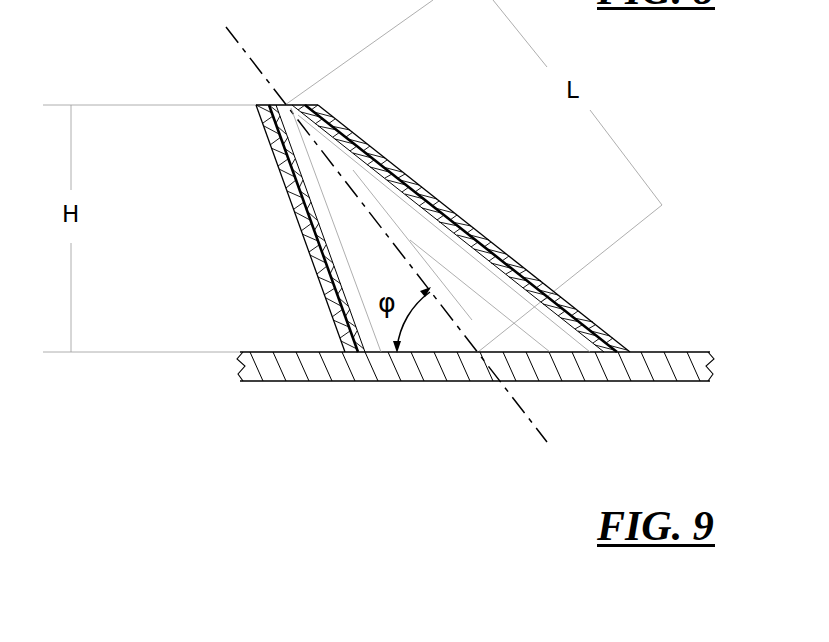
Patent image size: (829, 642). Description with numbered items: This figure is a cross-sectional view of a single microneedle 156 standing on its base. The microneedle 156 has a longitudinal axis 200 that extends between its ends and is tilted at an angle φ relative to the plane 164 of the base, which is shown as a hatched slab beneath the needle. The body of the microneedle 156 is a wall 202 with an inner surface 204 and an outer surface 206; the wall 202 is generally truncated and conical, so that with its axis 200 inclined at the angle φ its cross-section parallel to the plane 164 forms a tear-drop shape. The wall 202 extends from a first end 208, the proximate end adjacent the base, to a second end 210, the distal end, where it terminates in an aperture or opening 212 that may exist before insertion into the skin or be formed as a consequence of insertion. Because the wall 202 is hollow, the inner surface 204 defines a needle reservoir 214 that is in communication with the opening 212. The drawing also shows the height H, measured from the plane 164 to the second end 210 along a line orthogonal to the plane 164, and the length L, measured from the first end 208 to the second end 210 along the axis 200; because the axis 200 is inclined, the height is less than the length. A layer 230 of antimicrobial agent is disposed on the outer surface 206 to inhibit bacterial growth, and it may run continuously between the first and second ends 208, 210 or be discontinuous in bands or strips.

The microneedle 156 is at (454, 208).
The plane of the base 164 is at (296, 352).
The longitudinal axis 200 is at (232, 46).
The wall 202 is at (410, 188).
The inner surface 204 is at (395, 170).
The outer surface 206 is at (442, 212).
The first end 208 is at (640, 333).
The second end 210 is at (328, 101).
The aperture or opening 212 is at (268, 104).
The needle reservoir 214 is at (323, 198).
The layer of antimicrobial agent 230 is at (567, 299).